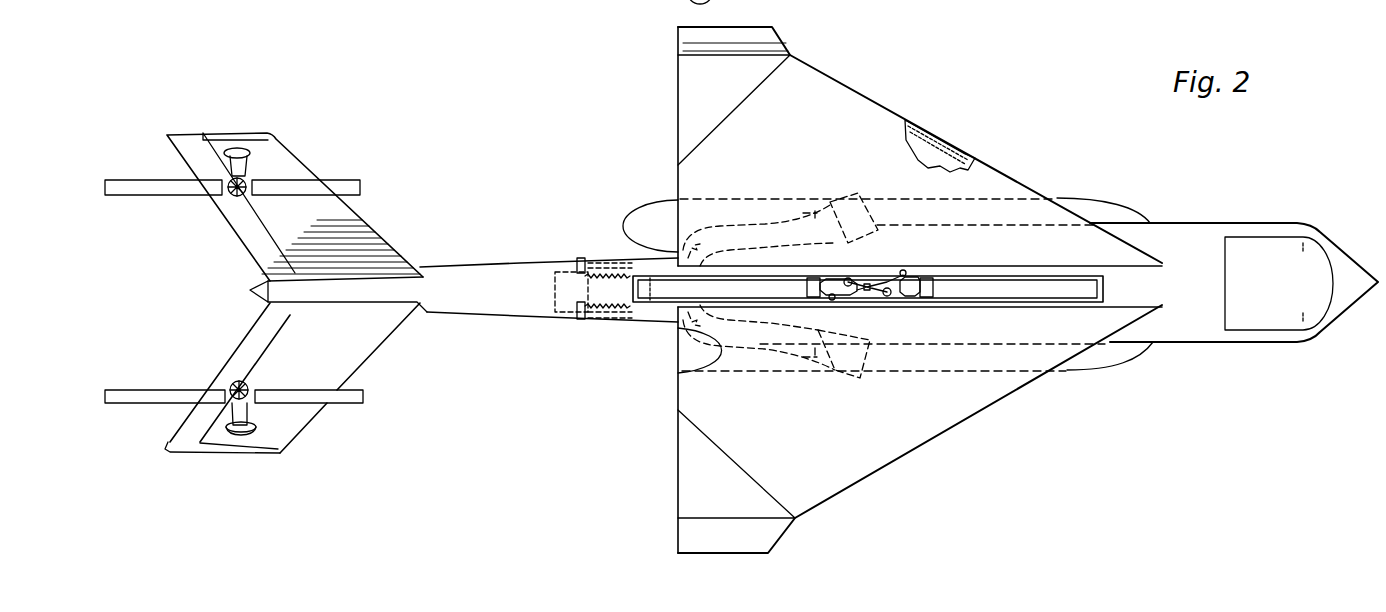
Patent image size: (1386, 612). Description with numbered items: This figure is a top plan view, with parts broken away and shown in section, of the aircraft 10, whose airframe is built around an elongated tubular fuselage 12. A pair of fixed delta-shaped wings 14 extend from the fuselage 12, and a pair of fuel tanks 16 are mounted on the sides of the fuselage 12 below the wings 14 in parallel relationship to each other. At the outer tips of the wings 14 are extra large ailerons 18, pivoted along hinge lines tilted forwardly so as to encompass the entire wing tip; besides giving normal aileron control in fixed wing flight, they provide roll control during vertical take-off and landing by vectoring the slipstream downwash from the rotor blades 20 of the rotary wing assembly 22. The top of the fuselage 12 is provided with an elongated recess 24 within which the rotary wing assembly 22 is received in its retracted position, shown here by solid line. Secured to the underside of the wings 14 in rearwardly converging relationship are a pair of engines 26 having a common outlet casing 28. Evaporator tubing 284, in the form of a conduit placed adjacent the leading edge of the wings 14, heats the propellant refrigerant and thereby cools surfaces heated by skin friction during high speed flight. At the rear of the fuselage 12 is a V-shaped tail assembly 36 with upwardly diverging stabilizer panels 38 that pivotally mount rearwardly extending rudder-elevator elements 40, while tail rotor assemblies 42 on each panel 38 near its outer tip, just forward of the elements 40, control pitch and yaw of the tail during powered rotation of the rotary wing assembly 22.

The aircraft 10 is at (1072, 128).
The fuselage 12 is at (1190, 346).
The fixed delta-shaped wings 14 is at (838, 81).
The fuel tanks 16 is at (1094, 374).
The ailerons 18 is at (693, 81).
The rotor blades 20 is at (1032, 287).
The rotary wing assembly 22 is at (949, 306).
The elongated recess 24 is at (887, 292).
The engines 26 is at (770, 355).
The common outlet casing 28 is at (648, 321).
The V-shaped tail assembly 36 is at (395, 206).
The stabilizer panels 38 is at (388, 258).
The rudder-elevator elements 40 is at (238, 215).
The tail rotor assemblies 42 is at (270, 426).
The evaporator tubing 284 is at (953, 147).